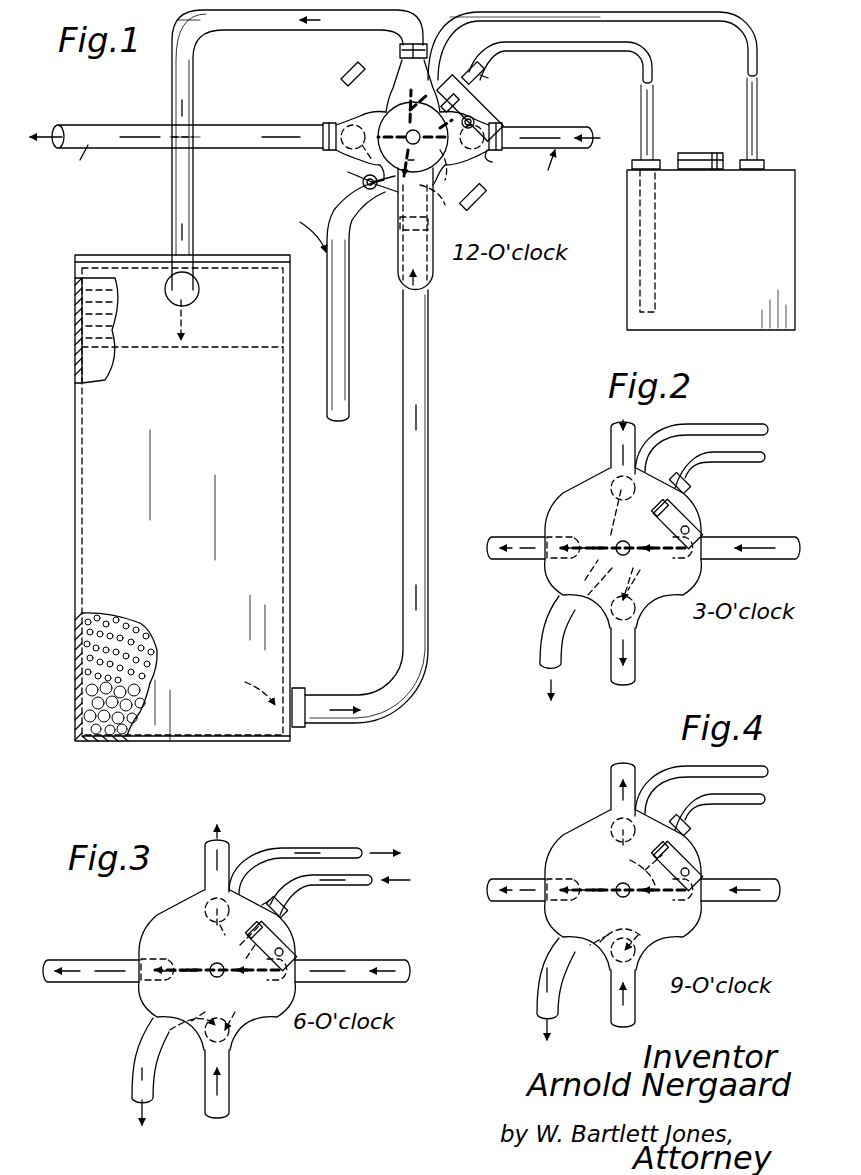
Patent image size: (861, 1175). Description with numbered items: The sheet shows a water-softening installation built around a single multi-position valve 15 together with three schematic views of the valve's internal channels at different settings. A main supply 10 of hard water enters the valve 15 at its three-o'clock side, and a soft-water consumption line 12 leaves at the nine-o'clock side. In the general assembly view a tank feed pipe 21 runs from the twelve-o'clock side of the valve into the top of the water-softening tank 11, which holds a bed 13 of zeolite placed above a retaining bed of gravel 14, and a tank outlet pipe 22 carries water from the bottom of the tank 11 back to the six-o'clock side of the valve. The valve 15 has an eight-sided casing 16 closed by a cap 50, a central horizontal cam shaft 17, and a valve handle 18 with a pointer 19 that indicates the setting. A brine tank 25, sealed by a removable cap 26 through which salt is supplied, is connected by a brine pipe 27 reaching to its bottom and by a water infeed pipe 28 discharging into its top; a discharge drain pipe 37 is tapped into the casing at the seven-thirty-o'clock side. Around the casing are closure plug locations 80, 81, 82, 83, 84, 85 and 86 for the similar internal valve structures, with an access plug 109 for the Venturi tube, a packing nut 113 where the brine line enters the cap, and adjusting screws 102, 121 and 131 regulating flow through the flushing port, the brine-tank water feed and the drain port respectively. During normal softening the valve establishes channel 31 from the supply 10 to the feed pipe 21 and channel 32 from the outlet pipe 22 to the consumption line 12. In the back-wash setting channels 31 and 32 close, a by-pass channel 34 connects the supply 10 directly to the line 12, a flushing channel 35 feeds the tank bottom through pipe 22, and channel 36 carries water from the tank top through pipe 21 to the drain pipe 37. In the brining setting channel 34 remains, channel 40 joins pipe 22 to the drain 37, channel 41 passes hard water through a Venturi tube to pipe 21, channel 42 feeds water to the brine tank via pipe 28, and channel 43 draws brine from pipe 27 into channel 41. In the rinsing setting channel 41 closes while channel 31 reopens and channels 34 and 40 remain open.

In FIG. 1, the main supply of hard water 10 is at (528, 128).
In FIG. 2, the main supply of hard water 10 is at (740, 540).
In FIG. 3, the main supply of hard water 10 is at (345, 960).
In FIG. 4, the main supply of hard water 10 is at (740, 882).
In FIG. 1, the water-softening tank 11 is at (272, 480).
In FIG. 1, the soft-water consumption line 12 is at (218, 128).
In FIG. 2, the soft-water consumption line 12 is at (500, 540).
In FIG. 3, the soft-water consumption line 12 is at (80, 962).
In FIG. 4, the soft-water consumption line 12 is at (500, 882).
In FIG. 1, the bed of zeolite 13 is at (82, 651).
In FIG. 1, the retaining bed of gravel 14 is at (82, 705).
In FIG. 1, the valve 15 is at (338, 103).
In FIG. 2, the valve 15 is at (565, 490).
In FIG. 3, the valve 15 is at (145, 1002).
In FIG. 4, the valve 15 is at (697, 918).
In FIG. 1, the casing 16 is at (380, 205).
In FIG. 1, the cam shaft 17 is at (408, 133).
In FIG. 2, the cam shaft 17 is at (625, 540).
In FIG. 3, the cam shaft 17 is at (215, 980).
In FIG. 4, the cam shaft 17 is at (630, 898).
In FIG. 1, the valve handle 18 is at (435, 278).
In FIG. 1, the pointer 19 is at (408, 70).
In FIG. 1, the tank feed pipe 21 is at (287, 35).
In FIG. 2, the tank feed pipe 21 is at (610, 444).
In FIG. 3, the tank feed pipe 21 is at (202, 872).
In FIG. 4, the tank feed pipe 21 is at (610, 786).
In FIG. 1, the tank outlet pipe 22 is at (430, 450).
In FIG. 2, the tank outlet pipe 22 is at (637, 655).
In FIG. 3, the tank outlet pipe 22 is at (230, 1086).
In FIG. 4, the tank outlet pipe 22 is at (637, 1010).
In FIG. 1, the brine tank 25 is at (627, 292).
In FIG. 1, the removable cap 26 is at (700, 152).
In FIG. 1, the brine pipe 27 is at (652, 96).
In FIG. 2, the brine pipe 27 is at (743, 465).
In FIG. 3, the brine pipe 27 is at (337, 888).
In FIG. 4, the brine pipe 27 is at (728, 805).
In FIG. 1, the water infeed pipe 28 is at (758, 88).
In FIG. 2, the water infeed pipe 28 is at (738, 430).
In FIG. 3, the water infeed pipe 28 is at (318, 845).
In FIG. 4, the water infeed pipe 28 is at (688, 770).
In FIG. 1, the channel 31 is at (442, 155).
In FIG. 4, the channel 31 is at (635, 866).
In FIG. 1, the channel 32 is at (424, 148).
In FIG. 2, the channel 34 is at (578, 545).
In FIG. 3, the channel 34 is at (165, 980).
In FIG. 4, the channel 34 is at (590, 892).
In FIG. 2, the flushing channel 35 is at (638, 575).
In FIG. 2, the channel 36 is at (585, 580).
In FIG. 1, the discharge drain pipe 37 is at (349, 325).
In FIG. 2, the discharge drain pipe 37 is at (540, 645).
In FIG. 3, the discharge drain pipe 37 is at (130, 1074).
In FIG. 4, the discharge drain pipe 37 is at (537, 1000).
In FIG. 3, the channel 40 is at (200, 1028).
In FIG. 4, the channel 40 is at (600, 935).
In FIG. 3, the channel 41 is at (220, 930).
In FIG. 3, the channel 42 is at (258, 965).
In FIG. 3, the channel 43 is at (262, 912).
In FIG. 1, the cap 50 is at (348, 160).
In FIG. 1, the closure plug location 80 is at (326, 122).
In FIG. 1, the closure plug location 81 is at (344, 73).
In FIG. 1, the closure plug location 82 is at (425, 44).
In FIG. 1, the closure plug location 83 is at (488, 78).
In FIG. 1, the closure plug location 84 is at (500, 128).
In FIG. 1, the closure plug location 85 is at (462, 198).
In FIG. 1, the closure plug location 86 is at (402, 232).
In FIG. 1, the adjusting screw 102 is at (445, 212).
In FIG. 1, the access plug 109 is at (508, 162).
In FIG. 1, the packing nut 113 is at (472, 65).
In FIG. 1, the adjusting screw 121 is at (478, 115).
In FIG. 2, the adjusting screw 121 is at (677, 523).
In FIG. 3, the adjusting screw 121 is at (288, 948).
In FIG. 4, the adjusting screw 121 is at (677, 865).
In FIG. 1, the adjustable screw 131 is at (362, 181).